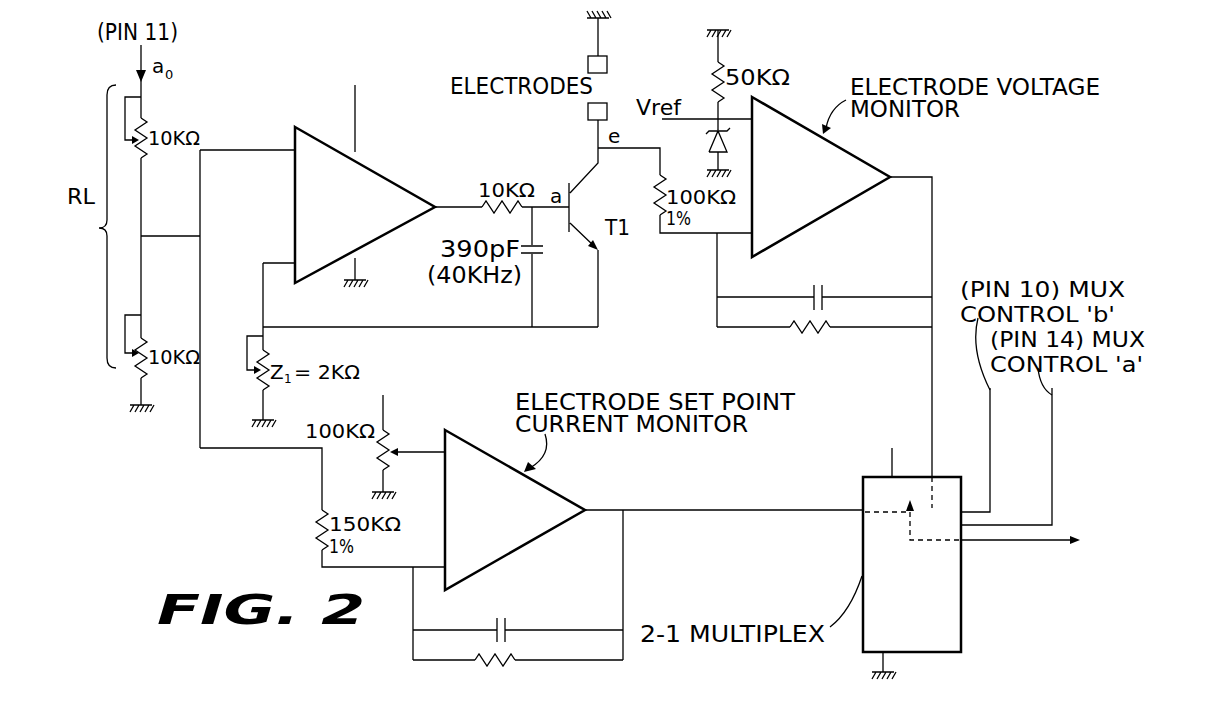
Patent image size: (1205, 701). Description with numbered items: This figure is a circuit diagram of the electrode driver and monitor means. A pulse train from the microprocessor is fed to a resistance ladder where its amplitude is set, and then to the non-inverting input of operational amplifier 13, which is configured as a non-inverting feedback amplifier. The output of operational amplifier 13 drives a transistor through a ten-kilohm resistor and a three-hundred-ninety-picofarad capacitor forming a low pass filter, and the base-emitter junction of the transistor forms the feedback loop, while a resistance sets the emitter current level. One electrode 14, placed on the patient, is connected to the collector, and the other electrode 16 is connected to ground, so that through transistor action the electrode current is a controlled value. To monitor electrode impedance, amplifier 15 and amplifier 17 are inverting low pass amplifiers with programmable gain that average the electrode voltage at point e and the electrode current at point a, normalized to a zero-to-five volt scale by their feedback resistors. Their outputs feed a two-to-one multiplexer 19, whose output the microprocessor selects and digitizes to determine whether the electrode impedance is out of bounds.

The operational amplifier 13 is at (387, 232).
The electrode 14 is at (588, 112).
The amplifier 15 is at (779, 235).
The electrode 16 is at (607, 68).
The amplifier 17 is at (561, 508).
The 2 to 1 multiplexer 19 is at (863, 523).